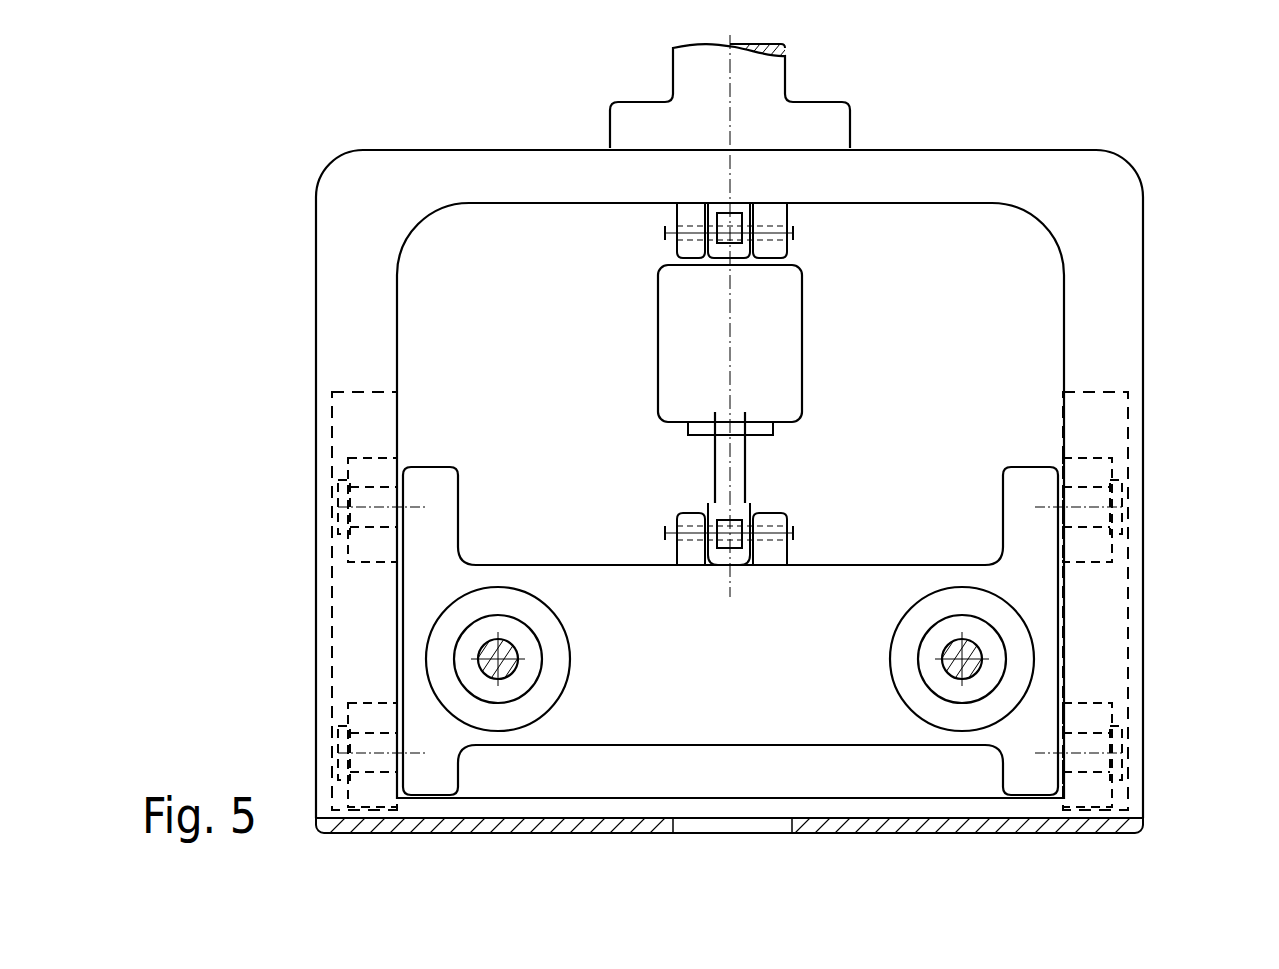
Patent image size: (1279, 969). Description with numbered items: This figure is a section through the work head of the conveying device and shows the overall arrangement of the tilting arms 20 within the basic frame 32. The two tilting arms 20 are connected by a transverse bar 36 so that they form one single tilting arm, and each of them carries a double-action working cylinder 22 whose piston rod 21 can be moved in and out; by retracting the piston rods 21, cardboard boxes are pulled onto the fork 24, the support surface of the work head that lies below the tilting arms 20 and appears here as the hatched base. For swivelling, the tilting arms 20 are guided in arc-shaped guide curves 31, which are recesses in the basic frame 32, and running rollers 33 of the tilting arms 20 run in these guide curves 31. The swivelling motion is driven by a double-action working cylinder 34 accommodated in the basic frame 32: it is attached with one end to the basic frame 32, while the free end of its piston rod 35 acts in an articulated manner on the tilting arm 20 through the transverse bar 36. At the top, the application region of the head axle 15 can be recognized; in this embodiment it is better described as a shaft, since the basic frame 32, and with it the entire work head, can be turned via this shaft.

The head axle 15 is at (705, 72).
The tilting arm 20 is at (508, 583).
The piston rod 21 is at (480, 652).
The double-action working cylinder 22 is at (452, 610).
The fork 24 is at (580, 822).
The guide curve 31 is at (352, 413).
The basic frame 32 is at (1105, 284).
The running roller 33 is at (362, 470).
The double-action working cylinder 34 is at (770, 318).
The piston rod 35 is at (745, 480).
The transverse bar 36 is at (848, 712).